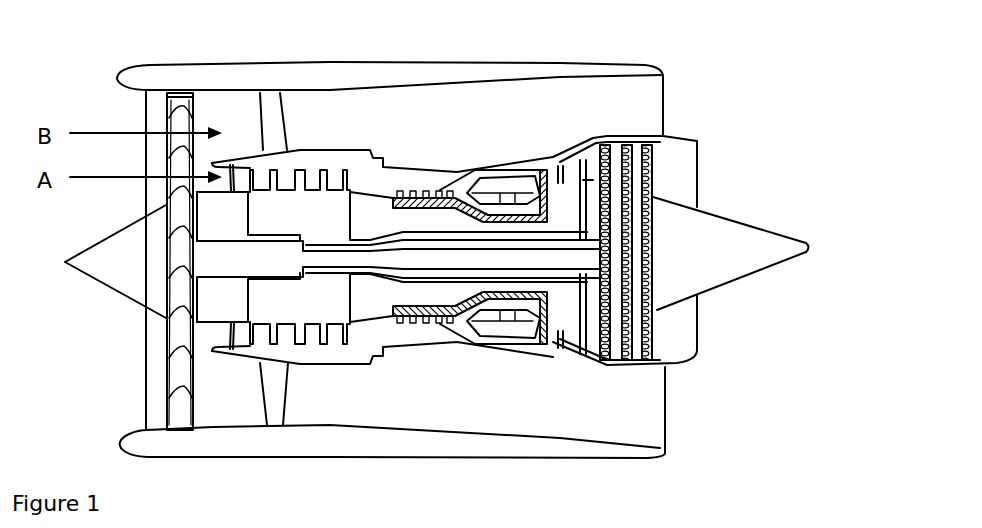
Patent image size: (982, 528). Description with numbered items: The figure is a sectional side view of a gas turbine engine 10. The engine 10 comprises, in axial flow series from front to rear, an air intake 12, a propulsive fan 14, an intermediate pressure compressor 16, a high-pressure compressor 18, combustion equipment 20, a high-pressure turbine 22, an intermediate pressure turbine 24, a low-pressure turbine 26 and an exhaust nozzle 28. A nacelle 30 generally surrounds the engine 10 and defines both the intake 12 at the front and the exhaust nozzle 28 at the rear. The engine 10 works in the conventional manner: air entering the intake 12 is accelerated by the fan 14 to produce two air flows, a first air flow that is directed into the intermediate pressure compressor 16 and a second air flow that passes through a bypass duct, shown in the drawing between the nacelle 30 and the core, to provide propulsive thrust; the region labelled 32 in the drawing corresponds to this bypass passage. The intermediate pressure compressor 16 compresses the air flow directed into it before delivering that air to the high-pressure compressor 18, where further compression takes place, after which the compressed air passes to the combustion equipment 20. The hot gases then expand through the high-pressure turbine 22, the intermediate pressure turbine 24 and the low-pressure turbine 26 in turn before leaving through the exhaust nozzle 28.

The gas turbine engine 10 is at (100, 70).
The air intake 12 is at (155, 112).
The propulsive fan 14 is at (172, 95).
The intermediate pressure compressor 16 is at (287, 210).
The high-pressure compressor 18 is at (418, 190).
The combustion equipment 20 is at (506, 184).
The high-pressure turbine 22 is at (548, 167).
The intermediate pressure turbine 24 is at (588, 179).
The low-pressure turbine 26 is at (650, 152).
The exhaust nozzle 28 is at (682, 185).
The nacelle 30 is at (262, 247).
The bypass duct 32 is at (455, 125).